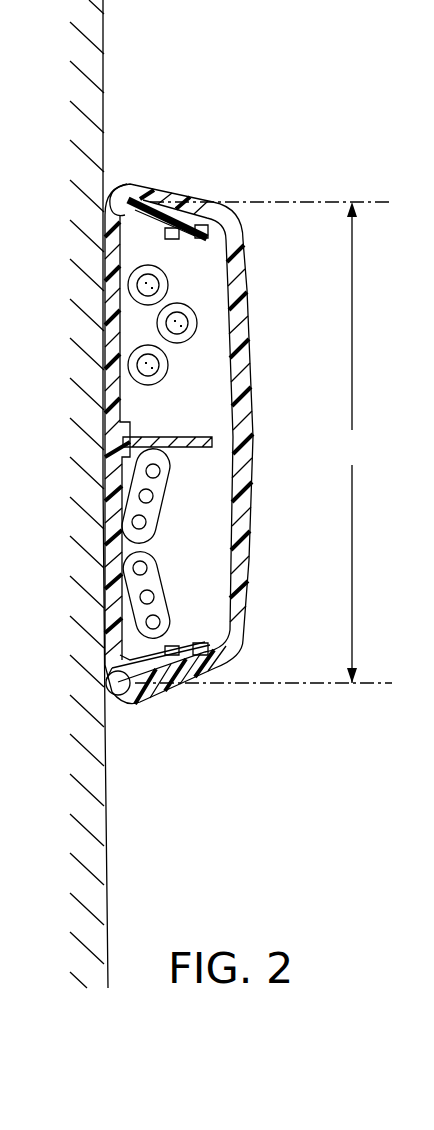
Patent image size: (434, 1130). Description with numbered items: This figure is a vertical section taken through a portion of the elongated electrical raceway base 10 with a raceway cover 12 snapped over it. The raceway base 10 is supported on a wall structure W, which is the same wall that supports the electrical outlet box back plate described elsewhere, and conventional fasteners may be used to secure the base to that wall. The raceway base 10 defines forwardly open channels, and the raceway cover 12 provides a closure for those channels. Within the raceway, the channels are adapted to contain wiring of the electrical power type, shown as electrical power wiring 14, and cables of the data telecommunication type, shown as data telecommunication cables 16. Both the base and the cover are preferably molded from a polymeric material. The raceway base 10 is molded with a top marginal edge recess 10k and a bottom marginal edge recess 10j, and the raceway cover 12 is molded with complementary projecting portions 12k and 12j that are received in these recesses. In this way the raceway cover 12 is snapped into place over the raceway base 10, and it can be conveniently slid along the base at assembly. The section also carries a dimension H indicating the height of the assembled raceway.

The wall structure W is at (108, 105).
The raceway cover 12 is at (247, 318).
The projecting portion 12k is at (141, 213).
The projecting portion 12j is at (152, 666).
The electrical raceway base 10 is at (122, 486).
The marginal edge recess 10k is at (122, 192).
The marginal edge recess 10j is at (112, 694).
The data telecommunication cables 16 is at (170, 373).
The electrical power wiring 14 is at (160, 507).
The height dimension H is at (263, 442).